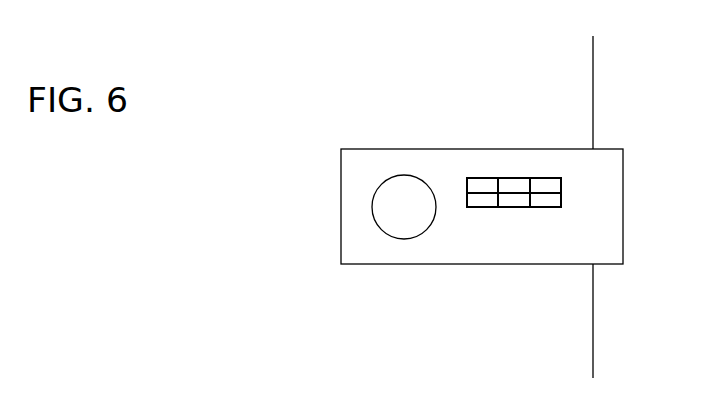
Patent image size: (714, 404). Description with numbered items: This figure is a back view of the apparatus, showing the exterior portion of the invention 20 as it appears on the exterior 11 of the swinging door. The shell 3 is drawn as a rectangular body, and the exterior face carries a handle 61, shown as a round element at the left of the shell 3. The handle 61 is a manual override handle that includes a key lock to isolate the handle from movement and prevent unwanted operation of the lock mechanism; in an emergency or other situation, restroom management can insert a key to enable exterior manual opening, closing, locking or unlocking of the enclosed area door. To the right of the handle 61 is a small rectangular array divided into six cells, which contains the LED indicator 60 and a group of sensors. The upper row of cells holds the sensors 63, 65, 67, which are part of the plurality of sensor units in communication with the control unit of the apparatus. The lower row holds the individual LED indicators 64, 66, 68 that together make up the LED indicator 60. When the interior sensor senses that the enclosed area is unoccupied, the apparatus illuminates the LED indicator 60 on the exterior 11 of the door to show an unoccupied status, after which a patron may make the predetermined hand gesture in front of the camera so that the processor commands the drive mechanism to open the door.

The shell 3 is at (605, 158).
The exterior 11 is at (567, 333).
The invention 20 is at (317, 90).
The LED indicator 60 is at (565, 191).
The handle 61 is at (382, 215).
The sensor 63 is at (473, 183).
The individual LED indicator 64 is at (480, 203).
The sensor 65 is at (508, 183).
The individual LED indicator 66 is at (505, 203).
The sensor 67 is at (538, 183).
The individual LED indicator 68 is at (545, 205).